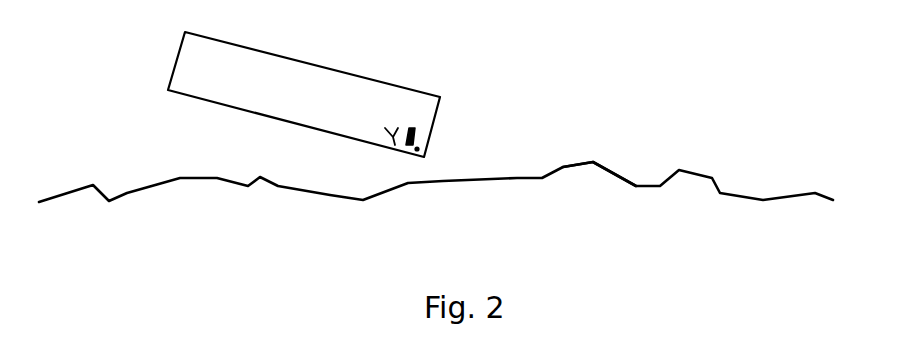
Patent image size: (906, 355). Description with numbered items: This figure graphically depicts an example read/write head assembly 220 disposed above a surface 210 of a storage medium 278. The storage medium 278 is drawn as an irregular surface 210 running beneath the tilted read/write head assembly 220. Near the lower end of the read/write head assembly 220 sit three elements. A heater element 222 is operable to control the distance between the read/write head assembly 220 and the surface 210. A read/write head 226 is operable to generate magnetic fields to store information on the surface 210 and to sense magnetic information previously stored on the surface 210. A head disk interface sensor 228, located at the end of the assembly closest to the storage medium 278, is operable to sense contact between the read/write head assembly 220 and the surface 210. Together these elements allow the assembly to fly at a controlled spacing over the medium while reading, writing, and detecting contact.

The surface 210 is at (593, 162).
The read/write head assembly 220 is at (226, 74).
The heater element 222 is at (385, 128).
The read/write head 226 is at (412, 128).
The head disk interface sensor 228 is at (417, 153).
The storage medium 278 is at (470, 224).